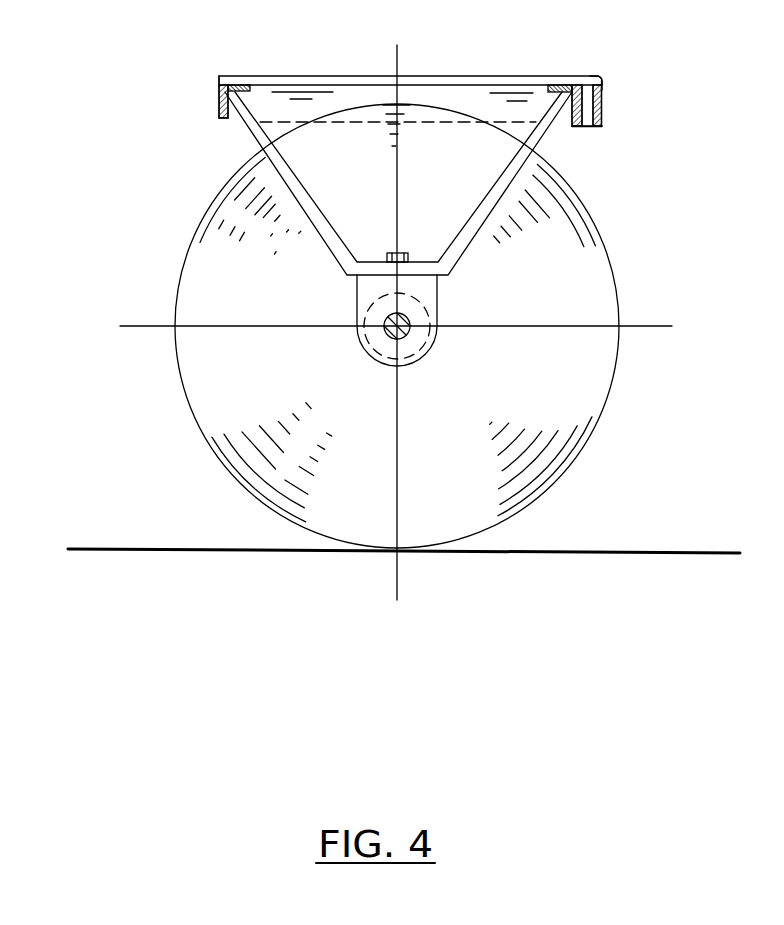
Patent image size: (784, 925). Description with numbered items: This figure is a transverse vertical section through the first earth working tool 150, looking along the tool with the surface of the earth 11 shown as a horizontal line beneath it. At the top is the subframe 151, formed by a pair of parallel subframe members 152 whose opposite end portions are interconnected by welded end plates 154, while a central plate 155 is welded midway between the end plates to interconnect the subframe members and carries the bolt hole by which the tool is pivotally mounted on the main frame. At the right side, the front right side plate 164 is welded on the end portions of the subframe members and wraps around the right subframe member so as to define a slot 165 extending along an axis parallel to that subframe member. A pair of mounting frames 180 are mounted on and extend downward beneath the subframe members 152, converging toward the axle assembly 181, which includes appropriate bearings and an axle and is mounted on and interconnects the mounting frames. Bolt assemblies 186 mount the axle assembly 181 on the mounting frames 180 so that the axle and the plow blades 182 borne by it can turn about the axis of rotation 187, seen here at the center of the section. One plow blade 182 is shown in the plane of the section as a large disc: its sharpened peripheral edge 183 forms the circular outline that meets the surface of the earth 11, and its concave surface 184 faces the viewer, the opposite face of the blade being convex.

The surface of the earth 11 is at (625, 552).
The first earth working tool 150 is at (630, 71).
The subframe 151 is at (604, 101).
The parallel subframe members 152 is at (218, 103).
The end plates 154 is at (276, 97).
The central plate 155 is at (467, 77).
The front right side plate 164 is at (604, 127).
The slot 165 is at (594, 84).
The mounting frames 180 is at (303, 212).
The axle assembly 181 is at (363, 353).
The plow blades 182 is at (220, 398).
The sharpened peripheral edge 183 is at (172, 340).
The concave surface 184 is at (517, 403).
The bolt assemblies 186 is at (402, 252).
The axis of rotation 187 is at (403, 318).